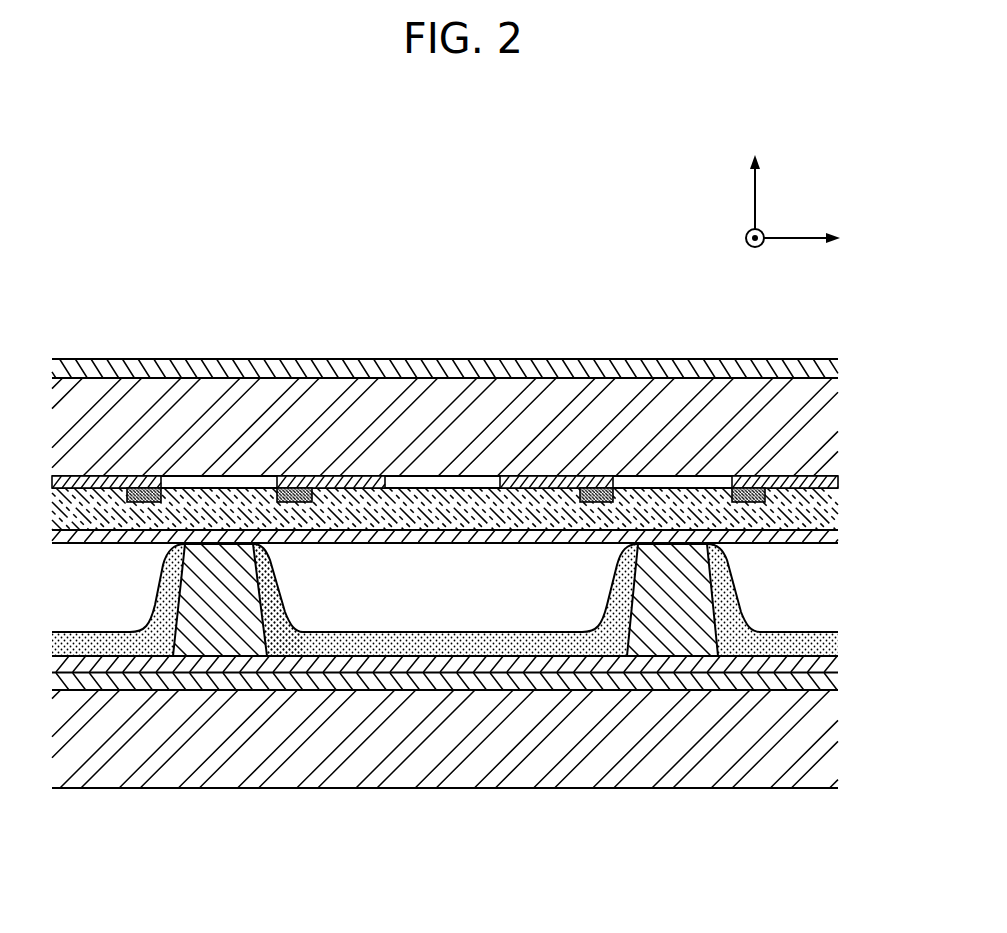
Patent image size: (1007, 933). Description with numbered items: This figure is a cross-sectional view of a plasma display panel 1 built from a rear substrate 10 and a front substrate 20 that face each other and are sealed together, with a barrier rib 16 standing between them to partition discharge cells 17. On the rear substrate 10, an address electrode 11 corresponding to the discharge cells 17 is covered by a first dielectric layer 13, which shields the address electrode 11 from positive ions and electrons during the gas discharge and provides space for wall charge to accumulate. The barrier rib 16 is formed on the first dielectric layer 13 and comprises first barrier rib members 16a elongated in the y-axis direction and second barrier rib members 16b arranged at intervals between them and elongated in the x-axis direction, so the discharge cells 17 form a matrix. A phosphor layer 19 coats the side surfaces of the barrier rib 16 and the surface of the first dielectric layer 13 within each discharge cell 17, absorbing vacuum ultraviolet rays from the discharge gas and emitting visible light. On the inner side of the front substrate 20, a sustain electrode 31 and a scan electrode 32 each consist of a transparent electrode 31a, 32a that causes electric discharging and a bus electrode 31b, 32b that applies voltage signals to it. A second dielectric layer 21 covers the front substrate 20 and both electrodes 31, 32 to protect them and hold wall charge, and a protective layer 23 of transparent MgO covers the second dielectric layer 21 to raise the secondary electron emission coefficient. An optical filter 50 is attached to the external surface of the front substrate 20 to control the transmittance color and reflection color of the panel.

The plasma display panel 1 is at (462, 227).
The rear substrate 10 is at (565, 765).
The address electrode 11 is at (477, 682).
The first dielectric layer 13 is at (418, 665).
The barrier rib 16 is at (447, 717).
The first barrier rib member 16a is at (310, 602).
The second barrier rib member 16b is at (222, 628).
The discharge cell 17 is at (462, 600).
The phosphor layer 19 is at (127, 643).
The front substrate 20 is at (88, 396).
The second dielectric layer 21 is at (828, 507).
The protective layer 23 is at (834, 537).
The sustain electrode 31 is at (323, 384).
The transparent electrode 31a is at (326, 478).
The bus electrode 31b is at (291, 478).
The scan electrode 32 is at (567, 384).
The transparent electrode 32a is at (578, 486).
The bus electrode 32b is at (598, 488).
The optical filter 50 is at (177, 368).